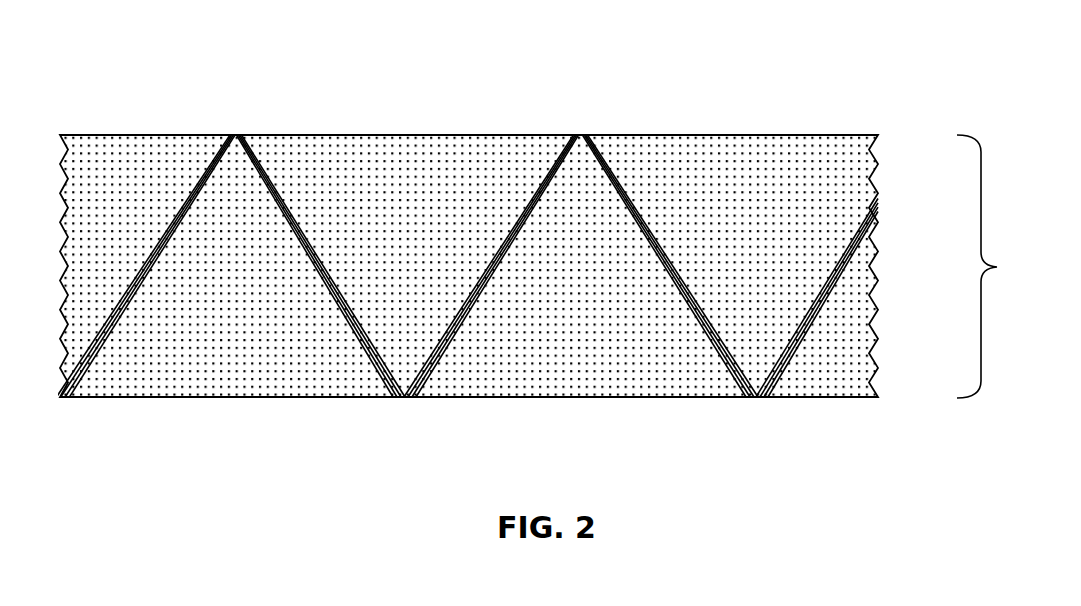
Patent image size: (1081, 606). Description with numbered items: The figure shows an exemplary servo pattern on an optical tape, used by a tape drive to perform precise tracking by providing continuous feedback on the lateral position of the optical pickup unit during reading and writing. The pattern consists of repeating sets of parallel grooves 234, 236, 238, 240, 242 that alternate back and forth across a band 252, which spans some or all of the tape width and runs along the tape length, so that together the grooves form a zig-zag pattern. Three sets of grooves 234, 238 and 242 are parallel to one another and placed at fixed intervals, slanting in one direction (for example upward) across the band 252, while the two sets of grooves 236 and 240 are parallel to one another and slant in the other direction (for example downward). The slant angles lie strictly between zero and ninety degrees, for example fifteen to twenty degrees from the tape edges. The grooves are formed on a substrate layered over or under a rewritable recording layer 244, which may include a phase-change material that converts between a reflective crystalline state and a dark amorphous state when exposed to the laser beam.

The set of parallel grooves 234 is at (175, 203).
The set of parallel grooves 236 is at (332, 293).
The set of parallel grooves 238 is at (520, 205).
The set of parallel grooves 240 is at (686, 293).
The set of parallel grooves 242 is at (853, 228).
The rewritable recording layer 244 is at (338, 182).
The band 252 is at (1002, 266).